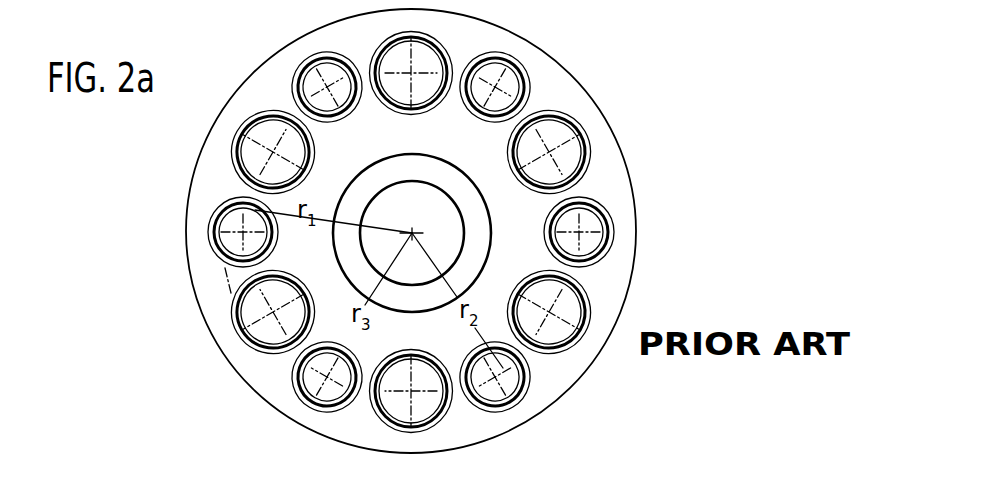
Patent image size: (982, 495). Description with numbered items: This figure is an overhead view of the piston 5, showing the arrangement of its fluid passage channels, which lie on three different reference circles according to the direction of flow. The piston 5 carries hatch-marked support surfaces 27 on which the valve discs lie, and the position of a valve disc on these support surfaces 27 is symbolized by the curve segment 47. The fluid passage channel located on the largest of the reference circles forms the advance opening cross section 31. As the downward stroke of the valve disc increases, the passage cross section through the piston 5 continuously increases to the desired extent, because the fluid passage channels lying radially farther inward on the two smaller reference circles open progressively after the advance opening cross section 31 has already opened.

The piston 5 is at (660, 152).
The support surfaces 27 is at (634, 244).
The advance opening cross section 31 is at (220, 242).
The curve segment 47 is at (240, 197).